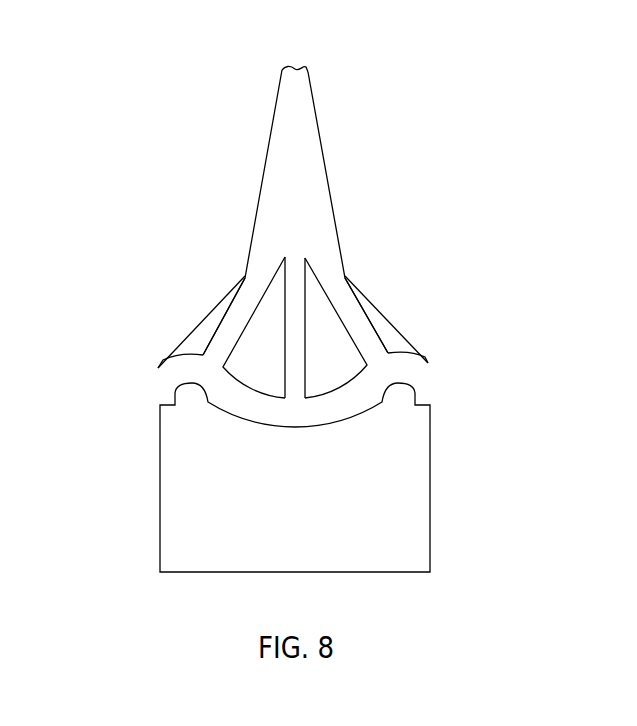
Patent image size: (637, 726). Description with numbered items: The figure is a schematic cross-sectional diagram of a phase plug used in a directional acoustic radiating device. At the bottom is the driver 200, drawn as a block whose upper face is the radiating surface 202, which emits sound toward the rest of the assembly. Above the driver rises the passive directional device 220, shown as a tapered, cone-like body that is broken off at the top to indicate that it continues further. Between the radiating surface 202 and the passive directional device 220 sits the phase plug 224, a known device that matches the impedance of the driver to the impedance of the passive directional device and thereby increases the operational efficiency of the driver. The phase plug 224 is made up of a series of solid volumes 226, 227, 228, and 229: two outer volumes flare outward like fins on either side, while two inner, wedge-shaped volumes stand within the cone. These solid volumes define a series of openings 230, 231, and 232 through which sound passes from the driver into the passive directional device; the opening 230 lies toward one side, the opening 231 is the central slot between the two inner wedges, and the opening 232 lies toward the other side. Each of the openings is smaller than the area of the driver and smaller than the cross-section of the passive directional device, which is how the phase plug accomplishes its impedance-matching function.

The driver 200 is at (407, 503).
The radiating surface 202 is at (297, 393).
The passive directional device 220 is at (290, 175).
The phase plug 224 is at (210, 295).
The solid volume 226 is at (185, 347).
The solid volume 227 is at (260, 377).
The solid volume 228 is at (320, 375).
The solid volume 229 is at (400, 337).
The opening 230 is at (232, 330).
The opening 231 is at (293, 393).
The opening 232 is at (357, 333).